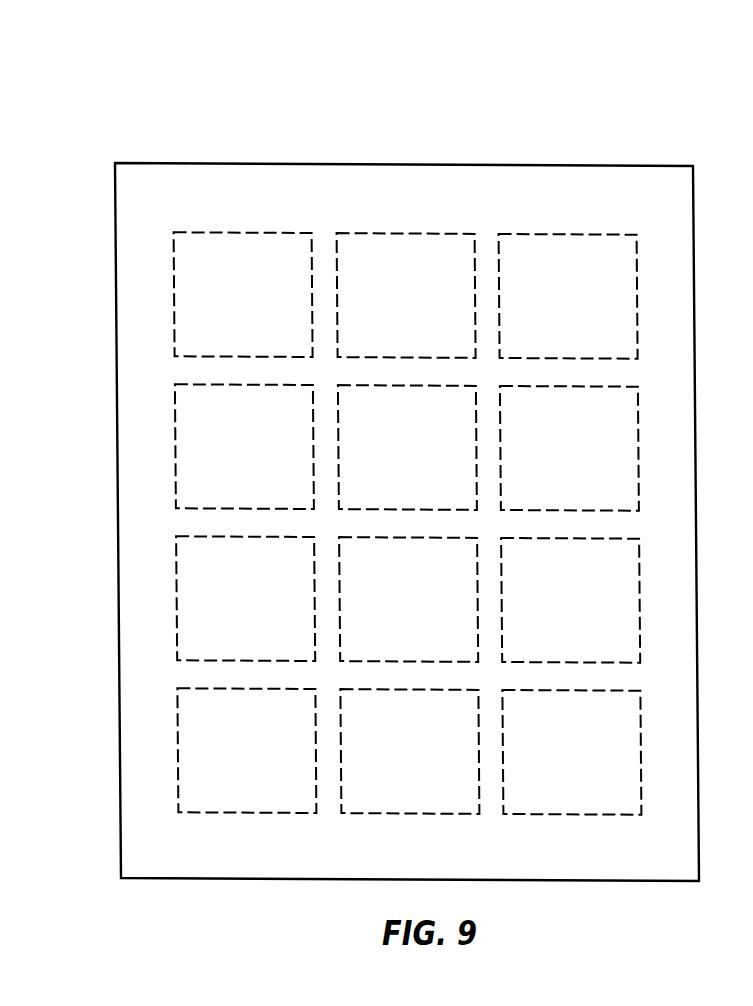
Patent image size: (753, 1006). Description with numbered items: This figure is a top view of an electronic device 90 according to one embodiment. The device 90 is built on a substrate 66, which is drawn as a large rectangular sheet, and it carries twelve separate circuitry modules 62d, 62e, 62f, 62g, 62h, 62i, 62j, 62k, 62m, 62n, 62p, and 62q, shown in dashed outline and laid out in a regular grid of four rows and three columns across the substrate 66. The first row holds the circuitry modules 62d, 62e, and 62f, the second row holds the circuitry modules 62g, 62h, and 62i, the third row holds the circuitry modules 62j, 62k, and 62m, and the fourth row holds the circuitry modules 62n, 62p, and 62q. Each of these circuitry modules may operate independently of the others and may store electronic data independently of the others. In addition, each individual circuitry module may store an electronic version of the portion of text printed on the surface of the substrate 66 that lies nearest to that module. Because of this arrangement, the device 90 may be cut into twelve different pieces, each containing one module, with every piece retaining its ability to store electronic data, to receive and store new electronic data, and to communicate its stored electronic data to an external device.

The electronic device 90 is at (119, 97).
The substrate 66 is at (145, 842).
The circuitry module 62d is at (227, 309).
The circuitry module 62e is at (390, 310).
The circuitry module 62f is at (552, 310).
The circuitry module 62g is at (228, 461).
The circuitry module 62h is at (391, 462).
The circuitry module 62i is at (553, 462).
The circuitry module 62j is at (262, 613).
The circuitry module 62k is at (425, 614).
The circuitry module 62m is at (587, 614).
The circuitry module 62n is at (231, 765).
The circuitry module 62p is at (394, 766).
The circuitry module 62q is at (556, 766).